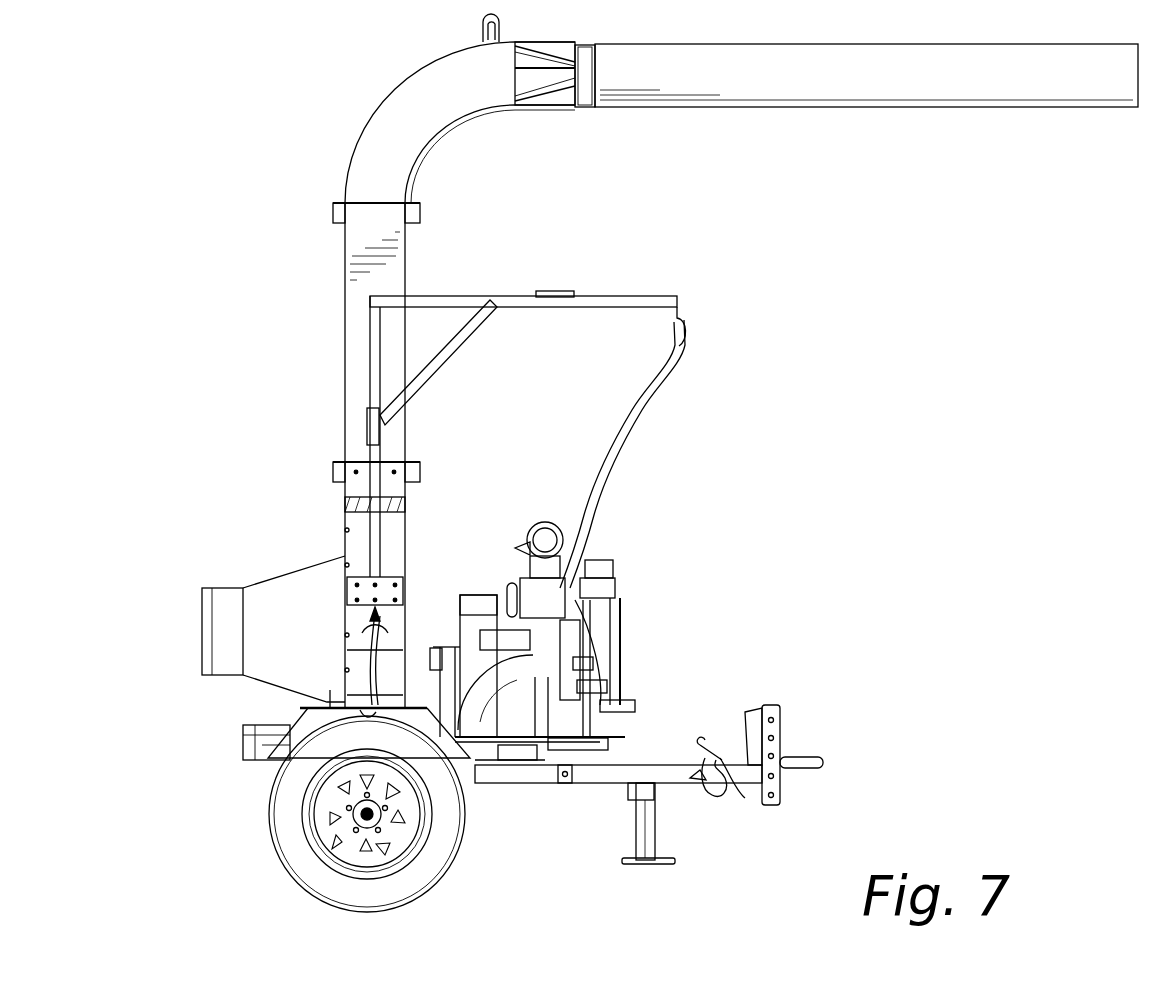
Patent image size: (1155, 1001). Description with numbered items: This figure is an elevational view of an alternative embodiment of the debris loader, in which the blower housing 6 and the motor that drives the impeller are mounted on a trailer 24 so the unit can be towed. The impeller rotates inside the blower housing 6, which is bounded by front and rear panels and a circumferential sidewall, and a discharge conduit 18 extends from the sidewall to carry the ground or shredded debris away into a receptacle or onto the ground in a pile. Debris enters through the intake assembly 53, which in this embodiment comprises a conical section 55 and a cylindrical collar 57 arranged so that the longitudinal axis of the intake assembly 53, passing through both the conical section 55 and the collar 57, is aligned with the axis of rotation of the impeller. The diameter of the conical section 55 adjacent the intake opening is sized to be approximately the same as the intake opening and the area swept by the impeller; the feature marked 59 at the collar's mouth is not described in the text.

The discharge conduit 18 is at (410, 139).
The blower housing 6 is at (413, 584).
The intake assembly 53 is at (222, 623).
The conical section 55 is at (300, 592).
The cylindrical collar 57 is at (227, 668).
The inlet opening 59 is at (191, 633).
The trailer 24 is at (558, 805).